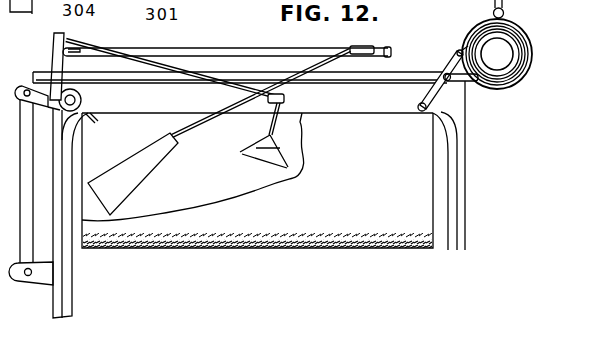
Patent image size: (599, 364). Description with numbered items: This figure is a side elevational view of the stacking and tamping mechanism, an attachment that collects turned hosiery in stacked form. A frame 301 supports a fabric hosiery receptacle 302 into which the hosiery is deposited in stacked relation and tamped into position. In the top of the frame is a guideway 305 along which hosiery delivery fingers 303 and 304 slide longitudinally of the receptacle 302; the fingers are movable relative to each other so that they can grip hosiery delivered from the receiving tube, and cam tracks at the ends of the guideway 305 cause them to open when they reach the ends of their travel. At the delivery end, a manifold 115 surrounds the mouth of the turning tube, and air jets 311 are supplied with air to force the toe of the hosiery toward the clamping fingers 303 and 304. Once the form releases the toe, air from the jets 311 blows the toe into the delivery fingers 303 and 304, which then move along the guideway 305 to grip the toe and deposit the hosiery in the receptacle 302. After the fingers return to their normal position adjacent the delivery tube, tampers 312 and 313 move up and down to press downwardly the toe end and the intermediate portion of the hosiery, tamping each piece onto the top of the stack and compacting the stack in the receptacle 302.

The frame 301 is at (64, 302).
The fabric hosiery receptacle 302 is at (241, 249).
The hosiery delivery finger 303 is at (457, 50).
The hosiery delivery fingers 304 is at (476, 82).
The guideway 305 is at (347, 80).
The air jets 311 is at (505, 22).
The tamper 312 is at (187, 125).
The tamper 313 is at (172, 69).
The manifold 115 is at (533, 57).